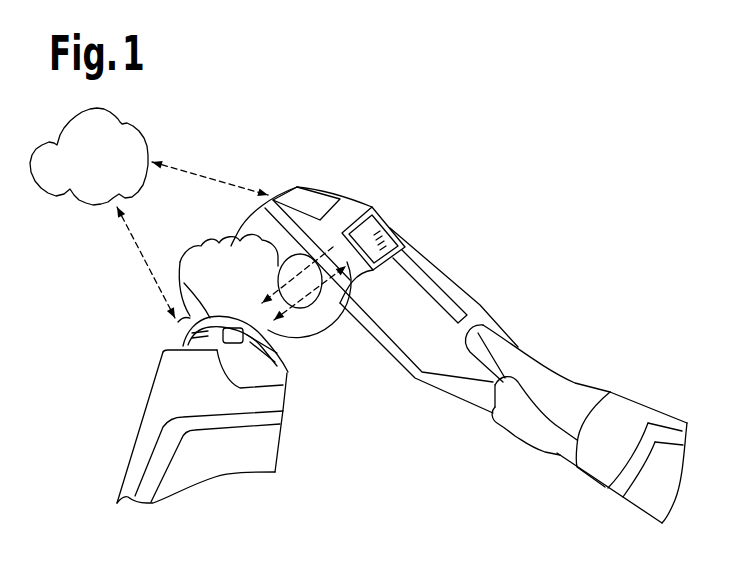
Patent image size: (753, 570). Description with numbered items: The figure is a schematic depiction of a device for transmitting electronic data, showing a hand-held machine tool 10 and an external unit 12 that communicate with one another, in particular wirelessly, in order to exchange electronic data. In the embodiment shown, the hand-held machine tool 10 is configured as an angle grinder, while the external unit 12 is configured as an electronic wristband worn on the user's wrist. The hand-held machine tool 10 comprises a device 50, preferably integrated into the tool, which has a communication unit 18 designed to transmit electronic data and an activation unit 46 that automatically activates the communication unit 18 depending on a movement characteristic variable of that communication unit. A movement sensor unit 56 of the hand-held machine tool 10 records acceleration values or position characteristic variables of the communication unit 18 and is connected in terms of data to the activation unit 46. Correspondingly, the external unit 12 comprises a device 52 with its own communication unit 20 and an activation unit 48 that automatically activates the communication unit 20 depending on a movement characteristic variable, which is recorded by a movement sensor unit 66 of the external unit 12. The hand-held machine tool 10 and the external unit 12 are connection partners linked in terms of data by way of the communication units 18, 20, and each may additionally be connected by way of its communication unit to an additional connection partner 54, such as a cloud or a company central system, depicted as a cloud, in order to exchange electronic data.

The hand-held machine tool 10 is at (573, 257).
The external unit 12 is at (180, 333).
The communication unit 18 is at (374, 221).
The communication unit 20 is at (163, 355).
The activation unit 46 is at (363, 206).
The activation unit 48 is at (182, 318).
The device 50 is at (407, 255).
The device 52 is at (287, 385).
The additional connection partner 54 is at (146, 136).
The movement sensor unit 56 is at (403, 231).
The movement sensor unit 66 is at (280, 352).